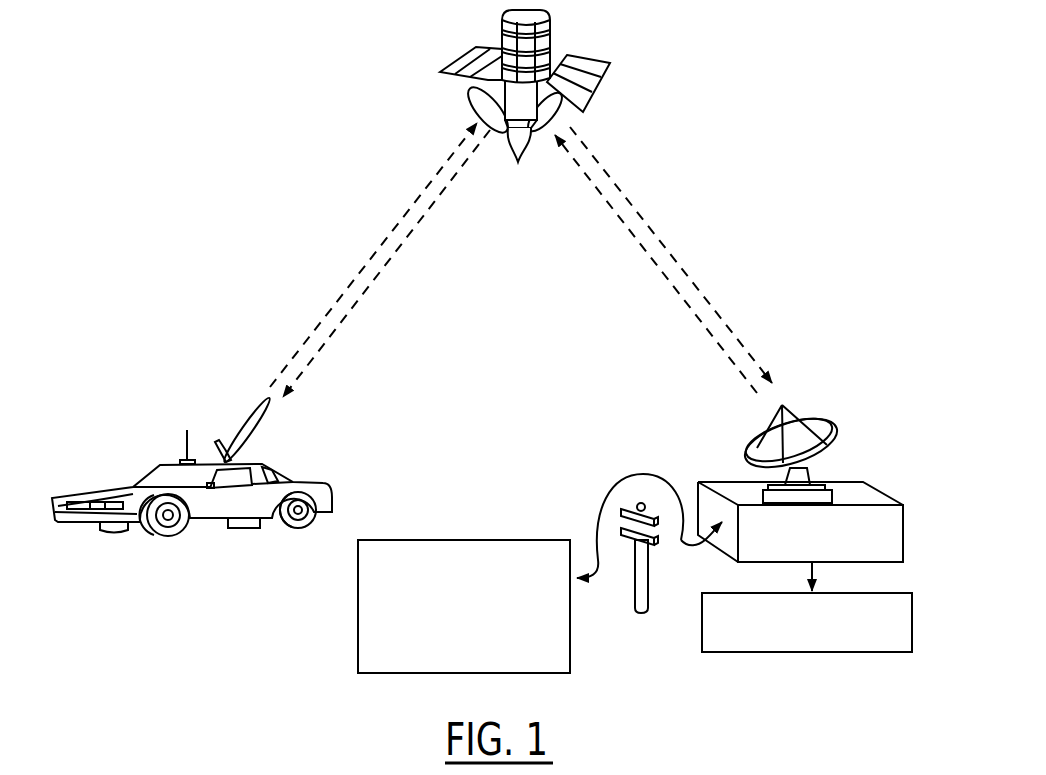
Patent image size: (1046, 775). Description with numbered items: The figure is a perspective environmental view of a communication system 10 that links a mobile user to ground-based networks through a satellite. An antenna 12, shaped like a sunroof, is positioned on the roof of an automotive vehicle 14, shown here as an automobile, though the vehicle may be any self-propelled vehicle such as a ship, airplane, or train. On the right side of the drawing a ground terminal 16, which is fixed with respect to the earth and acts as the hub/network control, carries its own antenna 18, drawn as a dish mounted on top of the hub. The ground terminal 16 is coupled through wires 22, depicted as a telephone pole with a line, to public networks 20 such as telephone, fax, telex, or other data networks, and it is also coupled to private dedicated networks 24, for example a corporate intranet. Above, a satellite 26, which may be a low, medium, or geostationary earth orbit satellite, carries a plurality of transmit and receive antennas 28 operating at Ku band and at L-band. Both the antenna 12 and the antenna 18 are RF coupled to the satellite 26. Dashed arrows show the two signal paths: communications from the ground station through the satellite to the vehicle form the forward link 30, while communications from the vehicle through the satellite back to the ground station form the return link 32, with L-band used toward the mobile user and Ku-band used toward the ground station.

The communication system 10 is at (582, 105).
The antenna 12 is at (187, 433).
The automotive vehicle 14 is at (192, 488).
The ground terminal 16 is at (858, 485).
The antenna 18 is at (823, 422).
The public networks 20 is at (474, 540).
The wires 22 is at (649, 530).
The private dedicated networks 24 is at (850, 653).
The satellite 26 is at (547, 56).
The transmit and receive antennas 28 is at (518, 160).
The forward link 30 is at (418, 225).
The return link 32 is at (375, 242).